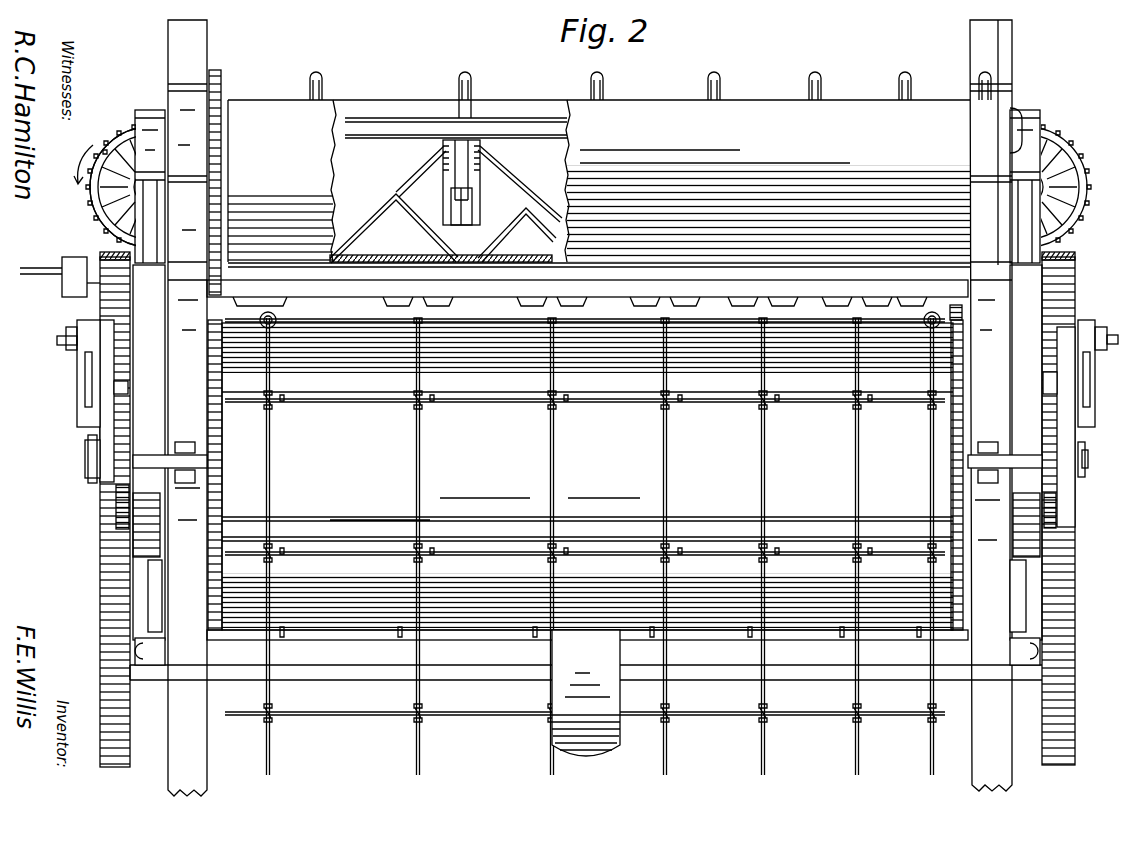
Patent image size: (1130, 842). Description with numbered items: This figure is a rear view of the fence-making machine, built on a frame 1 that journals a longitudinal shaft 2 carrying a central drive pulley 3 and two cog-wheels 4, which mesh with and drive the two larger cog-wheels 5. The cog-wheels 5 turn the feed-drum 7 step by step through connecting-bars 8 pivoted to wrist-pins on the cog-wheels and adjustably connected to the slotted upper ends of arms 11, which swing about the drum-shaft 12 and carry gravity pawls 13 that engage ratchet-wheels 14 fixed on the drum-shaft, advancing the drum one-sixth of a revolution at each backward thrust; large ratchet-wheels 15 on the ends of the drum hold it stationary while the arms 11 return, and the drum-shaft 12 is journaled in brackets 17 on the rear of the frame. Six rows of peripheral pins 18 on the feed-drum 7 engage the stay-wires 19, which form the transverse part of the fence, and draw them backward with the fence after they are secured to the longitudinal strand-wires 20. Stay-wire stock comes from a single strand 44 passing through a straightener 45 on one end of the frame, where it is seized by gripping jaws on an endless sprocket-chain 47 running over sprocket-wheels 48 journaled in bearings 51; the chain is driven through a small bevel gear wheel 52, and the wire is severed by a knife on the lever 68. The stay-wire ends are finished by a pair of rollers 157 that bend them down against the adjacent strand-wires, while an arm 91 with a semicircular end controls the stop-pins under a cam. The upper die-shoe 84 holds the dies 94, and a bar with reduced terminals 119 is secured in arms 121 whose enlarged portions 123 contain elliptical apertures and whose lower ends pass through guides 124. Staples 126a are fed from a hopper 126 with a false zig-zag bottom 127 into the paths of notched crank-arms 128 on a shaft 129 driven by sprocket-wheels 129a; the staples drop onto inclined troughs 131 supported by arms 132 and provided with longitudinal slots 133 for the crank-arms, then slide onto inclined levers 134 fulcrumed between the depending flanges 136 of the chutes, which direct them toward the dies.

The frame 1 is at (168, 47).
The longitudinal shaft 2 is at (587, 645).
The central drive pulley 3 is at (586, 693).
The cog-wheel 4 is at (103, 680).
The larger cog-wheel 5 is at (103, 258).
The feed-drum 7 is at (587, 476).
The connecting-bar 8 is at (77, 357).
The arm 11 is at (105, 372).
The drum-shaft 12 is at (85, 462).
The gravity pawl 13 is at (114, 386).
The ratchet-wheel 14 is at (116, 506).
The large ratchet-wheel 15 is at (212, 363).
The bracket 17 is at (587, 514).
The peripheral pin 18 is at (395, 320).
The stay-wire 19 is at (480, 318).
The strand-wire 20 is at (271, 471).
The strand 44 is at (40, 275).
The straightener 45 is at (68, 296).
The endless sprocket-chain 47 is at (88, 205).
The sprocket-wheel 48 is at (125, 142).
The bearing 51 is at (163, 101).
The small bevel gear wheel 52 is at (106, 150).
The lever 68 is at (268, 311).
The upper die-shoe 84 is at (587, 290).
The arm 91 is at (925, 311).
The die 94 is at (300, 299).
The reduced terminal 119 is at (224, 143).
The arm 121 is at (152, 219).
The enlarged portion 123 is at (155, 390).
The guide 124 is at (162, 651).
The hopper 126 is at (625, 183).
The staple 126a is at (603, 80).
The false zig-zag bottom 127 is at (423, 222).
The crank-arm 128 is at (322, 88).
The shaft 129 is at (233, 93).
The sprocket-wheel 129a is at (220, 70).
The inclined trough 131 is at (442, 148).
The arm 132 is at (506, 176).
The longitudinal slot 133 is at (468, 157).
The inclined lever 134 is at (487, 193).
The depending flange 136 is at (452, 209).
The roller 157 is at (285, 318).